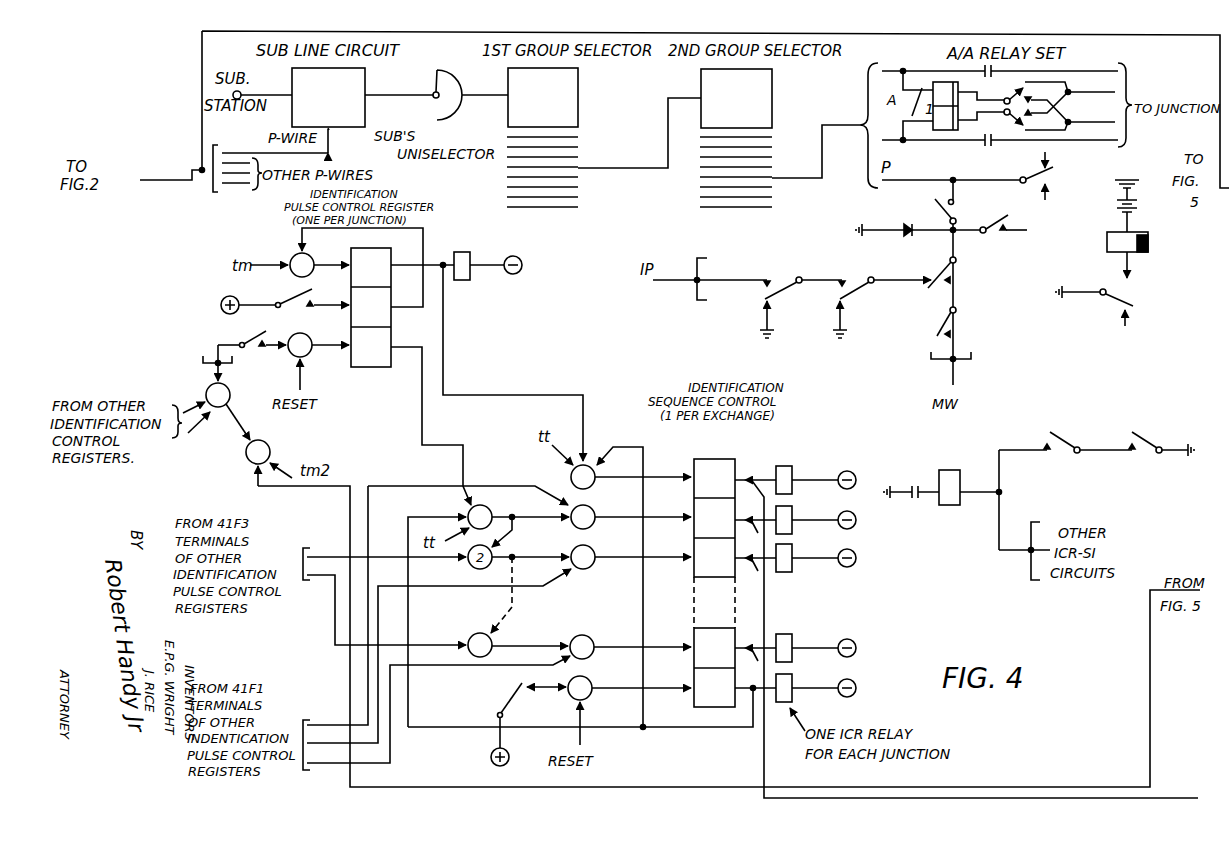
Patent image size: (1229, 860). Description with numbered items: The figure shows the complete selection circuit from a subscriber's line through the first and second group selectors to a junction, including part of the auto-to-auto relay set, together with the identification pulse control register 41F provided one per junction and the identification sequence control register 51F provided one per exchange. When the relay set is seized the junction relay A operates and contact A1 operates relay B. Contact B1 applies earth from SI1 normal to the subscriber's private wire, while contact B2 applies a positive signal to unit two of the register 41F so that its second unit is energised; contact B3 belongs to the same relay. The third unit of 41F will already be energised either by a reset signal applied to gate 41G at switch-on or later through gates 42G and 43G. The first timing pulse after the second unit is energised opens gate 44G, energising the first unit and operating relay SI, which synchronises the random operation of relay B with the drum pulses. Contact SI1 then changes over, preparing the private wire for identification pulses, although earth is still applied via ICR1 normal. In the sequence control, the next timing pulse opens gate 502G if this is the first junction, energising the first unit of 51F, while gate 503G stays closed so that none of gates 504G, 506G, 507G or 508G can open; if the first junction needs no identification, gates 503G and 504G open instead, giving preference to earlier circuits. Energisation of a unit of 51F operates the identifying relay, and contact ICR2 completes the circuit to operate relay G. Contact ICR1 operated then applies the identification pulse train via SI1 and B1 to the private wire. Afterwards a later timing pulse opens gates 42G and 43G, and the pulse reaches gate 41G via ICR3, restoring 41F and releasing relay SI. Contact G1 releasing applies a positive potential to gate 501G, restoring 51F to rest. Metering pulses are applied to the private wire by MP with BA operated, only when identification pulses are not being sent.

The identification pulse control register 41F is at (371, 299).
The gate 41G is at (318, 357).
The gate 42G is at (264, 445).
The gate 43G is at (218, 391).
The gate 44G is at (299, 261).
The identification sequence control register 51F is at (714, 573).
The gate 501G is at (609, 706).
The gate 502G is at (609, 586).
The gate 503G is at (488, 611).
The gate 504G is at (631, 513).
The gate 506G is at (499, 640).
The gate 507G is at (399, 616).
The gate 508G is at (499, 695).
The contact B1 is at (957, 205).
The contact B2 is at (285, 299).
The contact B3 is at (1003, 234).
The metering pulse contact MP is at (957, 260).
The contact BA is at (963, 300).
The contact ICR1 is at (771, 298).
The contact ICR3 is at (245, 337).
The contact SI1 is at (838, 298).
The contact G1 is at (509, 724).
The contact A1 is at (1107, 306).
The contact ICR2 is at (1039, 454).